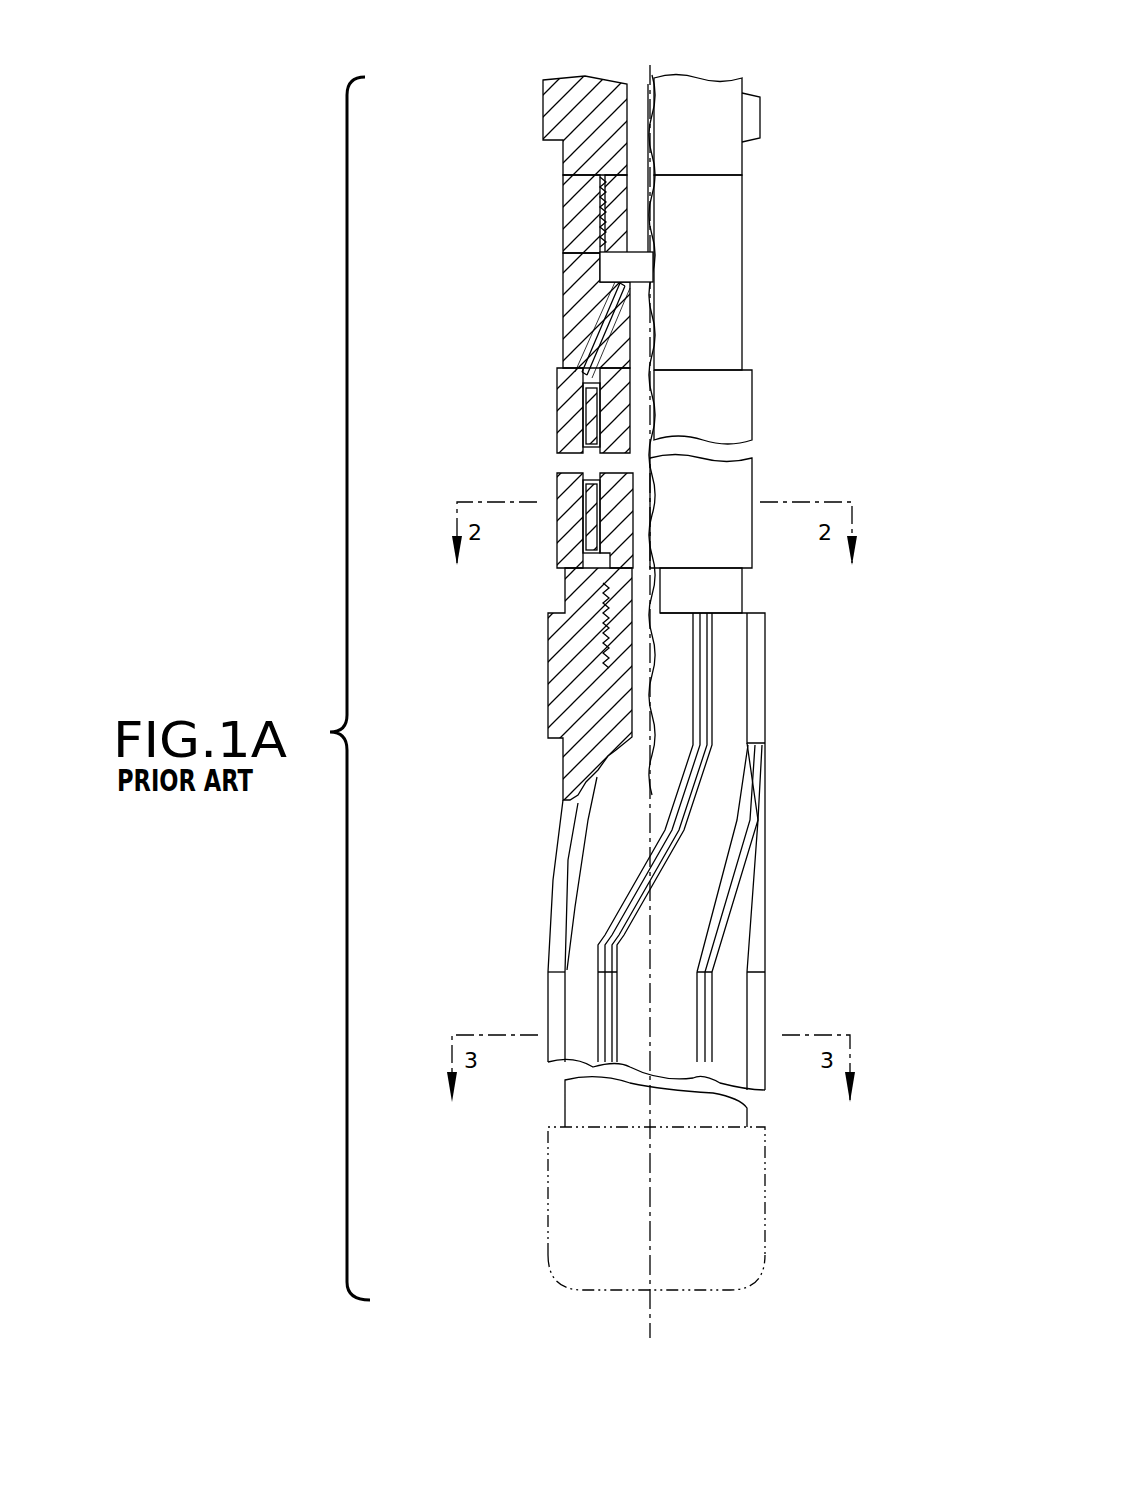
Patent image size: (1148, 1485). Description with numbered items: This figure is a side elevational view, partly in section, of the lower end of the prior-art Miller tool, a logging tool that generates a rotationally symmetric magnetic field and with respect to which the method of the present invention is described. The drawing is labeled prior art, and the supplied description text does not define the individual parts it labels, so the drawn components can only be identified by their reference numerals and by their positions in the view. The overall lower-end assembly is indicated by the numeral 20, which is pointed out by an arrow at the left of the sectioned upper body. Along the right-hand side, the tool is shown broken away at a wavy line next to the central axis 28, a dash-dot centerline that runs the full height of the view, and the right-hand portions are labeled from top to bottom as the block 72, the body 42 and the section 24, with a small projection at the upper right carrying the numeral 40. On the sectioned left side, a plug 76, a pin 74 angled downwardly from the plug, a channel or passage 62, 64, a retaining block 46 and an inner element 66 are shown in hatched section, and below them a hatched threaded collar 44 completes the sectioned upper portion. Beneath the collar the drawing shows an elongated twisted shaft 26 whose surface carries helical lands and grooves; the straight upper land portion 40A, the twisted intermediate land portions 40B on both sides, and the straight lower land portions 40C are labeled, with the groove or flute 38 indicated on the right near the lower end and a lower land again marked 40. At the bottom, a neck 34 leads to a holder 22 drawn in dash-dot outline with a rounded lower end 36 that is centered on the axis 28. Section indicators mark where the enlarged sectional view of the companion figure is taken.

The drilling tool assembly 20 is at (538, 390).
The drill bit holder / chuck 22 is at (718, 1210).
The housing section 24 is at (712, 422).
The twisted shaft 26 is at (669, 851).
The central axis 28 is at (653, 1318).
The neck portion 34 is at (725, 1113).
The rounded end of holder 36 is at (763, 1268).
The flute 38 is at (730, 968).
The land 40 is at (748, 132).
The upper land portion 40A is at (753, 657).
The twisted land portion 40B is at (582, 818).
The lower land portion 40C is at (603, 1018).
The housing body 42 is at (708, 250).
The threaded collar 44 is at (572, 633).
The retaining block 46 is at (600, 412).
The channel 62 is at (532, 330).
The passage 64 is at (608, 336).
The insert 66 is at (604, 418).
The upper housing 72 is at (708, 137).
The pin 74 is at (612, 313).
The plug 76 is at (612, 261).